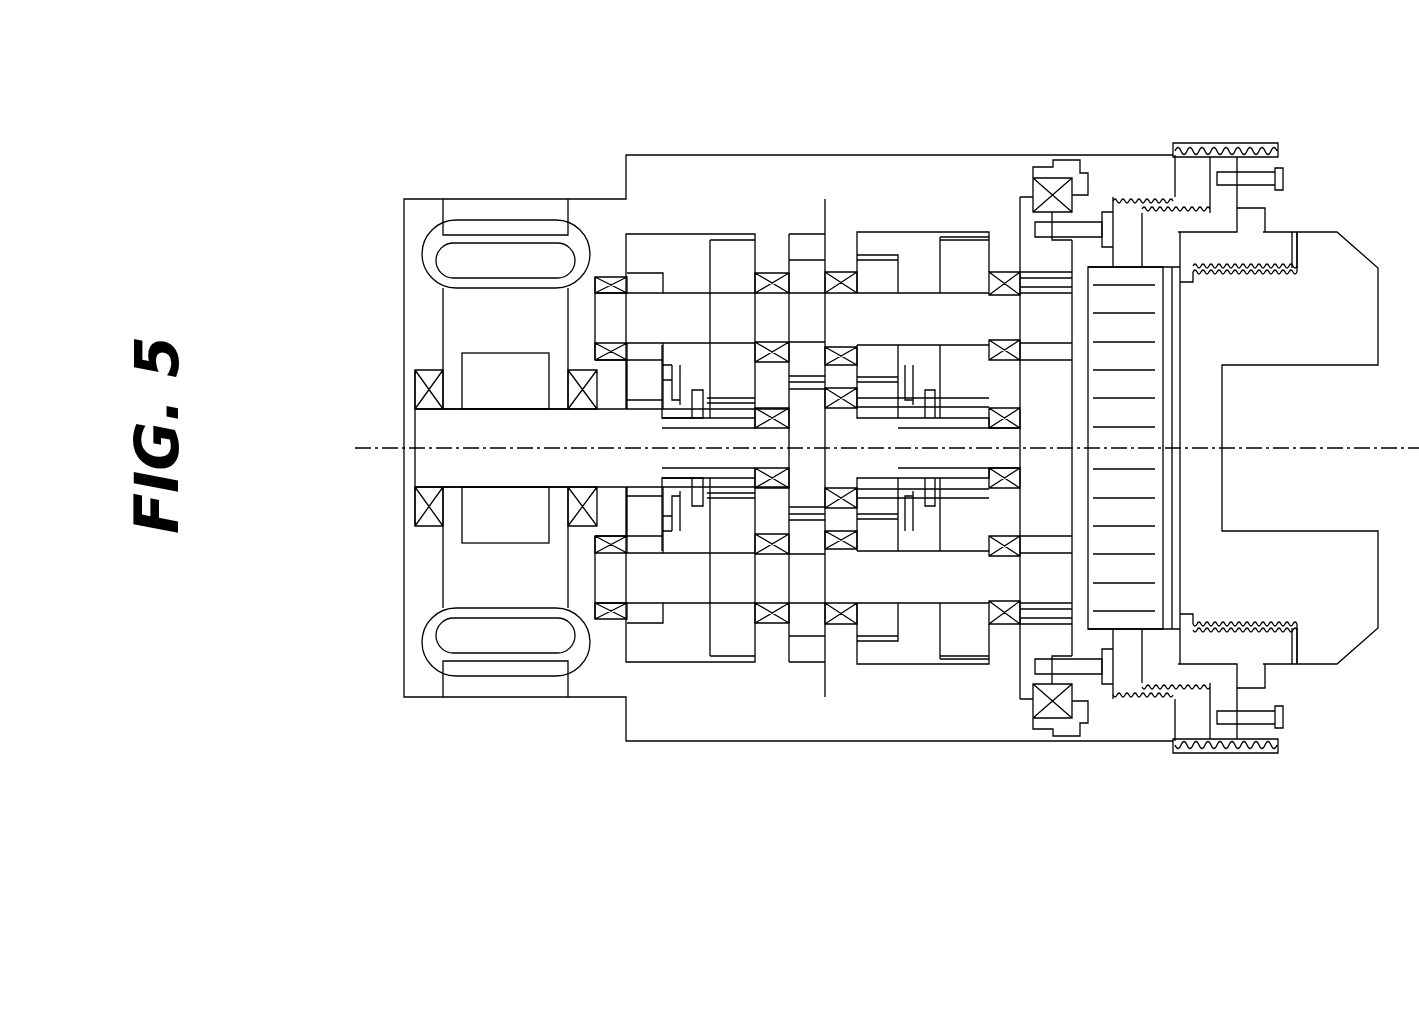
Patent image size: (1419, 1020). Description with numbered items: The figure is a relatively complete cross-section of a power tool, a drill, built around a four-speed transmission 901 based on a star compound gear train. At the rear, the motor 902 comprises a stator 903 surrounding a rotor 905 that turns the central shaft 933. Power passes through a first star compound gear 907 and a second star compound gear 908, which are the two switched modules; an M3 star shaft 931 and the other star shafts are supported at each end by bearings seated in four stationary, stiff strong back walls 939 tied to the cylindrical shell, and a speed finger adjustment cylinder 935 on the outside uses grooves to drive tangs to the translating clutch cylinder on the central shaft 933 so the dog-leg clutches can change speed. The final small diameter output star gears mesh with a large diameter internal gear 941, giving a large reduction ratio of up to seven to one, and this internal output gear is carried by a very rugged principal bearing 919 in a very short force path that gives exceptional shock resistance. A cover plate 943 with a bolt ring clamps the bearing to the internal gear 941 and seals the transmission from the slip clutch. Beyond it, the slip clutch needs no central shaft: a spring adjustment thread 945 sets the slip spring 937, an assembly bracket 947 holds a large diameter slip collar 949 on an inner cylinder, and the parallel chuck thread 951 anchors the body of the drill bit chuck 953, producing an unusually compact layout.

The 4-speed transmission 901 is at (426, 101).
The motor 902 is at (422, 590).
The stator 903 is at (432, 257).
The rotor 905 is at (463, 308).
The first star compound gear 907 is at (688, 530).
The second star compound gear 908 is at (926, 371).
The principal bearing 919 is at (1043, 176).
The M3 star shaft 931 is at (650, 316).
The central shaft 933 is at (425, 479).
The speed finger adjustment cylinder 935 is at (641, 742).
The slip spring 937 is at (1148, 357).
The strong back walls 939 is at (582, 685).
The internal gear 941 is at (1048, 636).
The cover plate 943 is at (1084, 650).
The spring adjustment thread 945 is at (1141, 198).
The assembly bracket 947 is at (1286, 178).
The slip collar 949 is at (1273, 211).
The chuck thread 951 is at (1206, 282).
The drill bit chuck 953 is at (1330, 502).